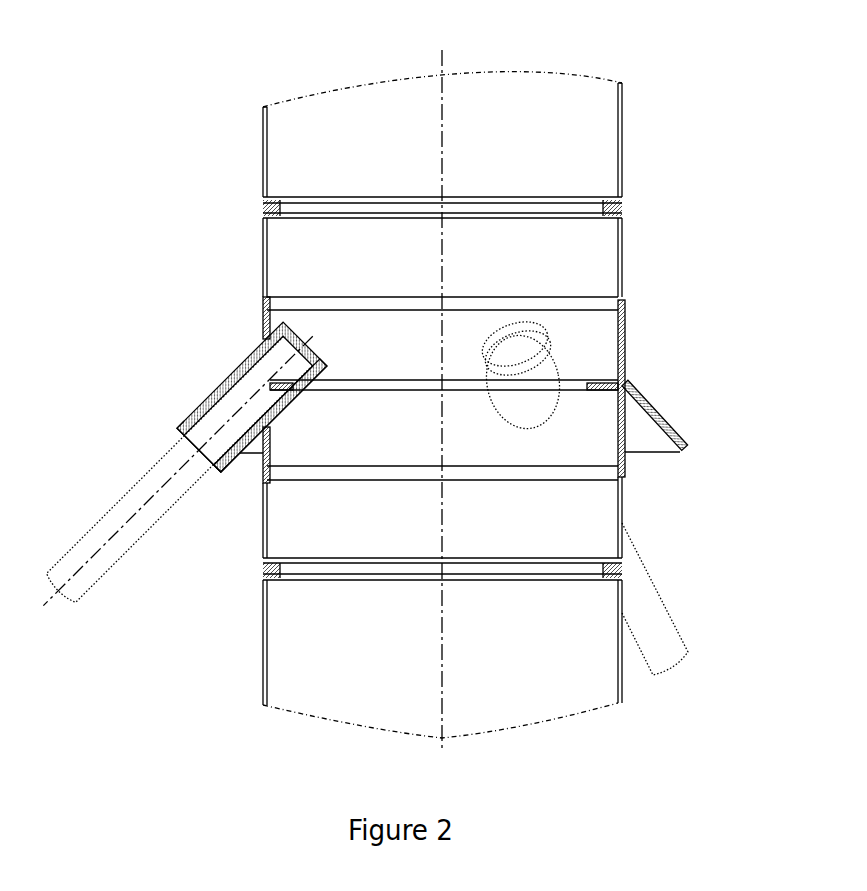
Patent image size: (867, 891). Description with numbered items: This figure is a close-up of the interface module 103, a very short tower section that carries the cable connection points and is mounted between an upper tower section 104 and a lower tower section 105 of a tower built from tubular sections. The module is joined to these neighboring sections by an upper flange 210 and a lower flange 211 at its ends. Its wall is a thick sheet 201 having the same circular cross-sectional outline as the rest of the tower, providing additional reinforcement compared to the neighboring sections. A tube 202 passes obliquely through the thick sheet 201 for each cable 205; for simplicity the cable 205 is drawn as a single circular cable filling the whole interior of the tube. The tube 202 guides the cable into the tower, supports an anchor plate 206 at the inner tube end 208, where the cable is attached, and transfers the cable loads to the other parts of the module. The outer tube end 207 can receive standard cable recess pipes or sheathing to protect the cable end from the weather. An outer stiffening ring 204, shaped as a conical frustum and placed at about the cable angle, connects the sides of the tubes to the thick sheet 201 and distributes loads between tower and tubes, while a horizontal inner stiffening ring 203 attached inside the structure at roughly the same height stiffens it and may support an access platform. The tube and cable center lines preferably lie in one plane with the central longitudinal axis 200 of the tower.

The central longitudinal axis 200 is at (442, 50).
The upper tower section 104 is at (622, 137).
The upper flange 210 is at (613, 222).
The interface module 103 is at (622, 263).
The thick sheet 201 is at (263, 323).
The inner stiffening ring 203 is at (603, 380).
The outer stiffening ring 204 is at (677, 437).
The anchor plate 206 is at (500, 345).
The inner tube end 208 is at (315, 380).
The tube 202 is at (227, 378).
The outer tube end 207 is at (180, 423).
The cable 205 is at (137, 480).
The lower flange 211 is at (617, 560).
The lower tower section 105 is at (622, 697).